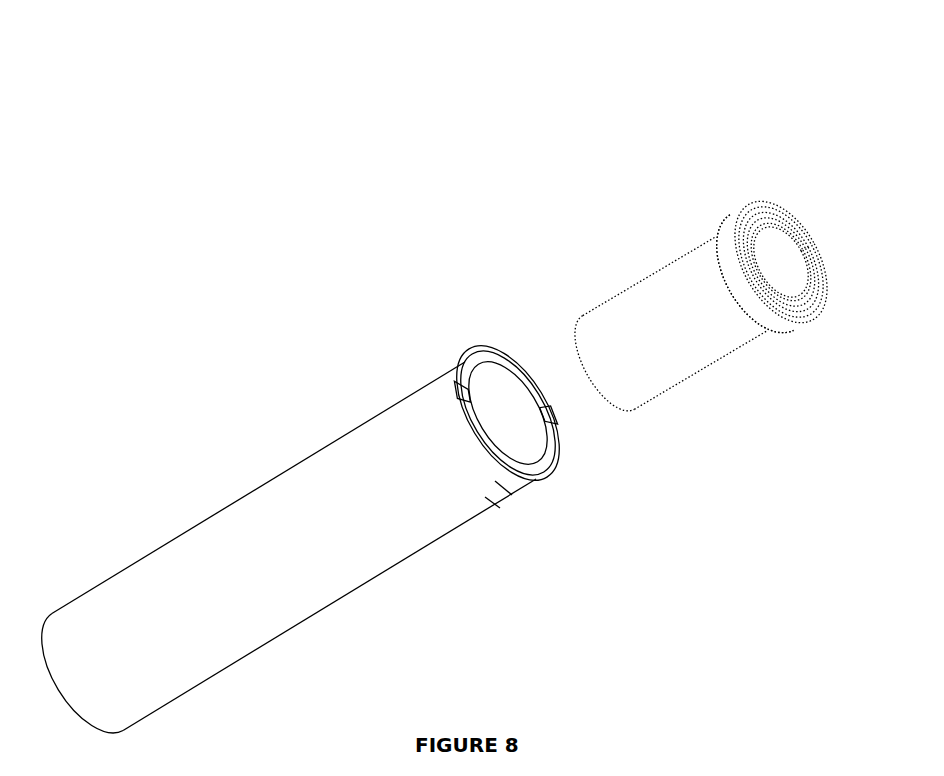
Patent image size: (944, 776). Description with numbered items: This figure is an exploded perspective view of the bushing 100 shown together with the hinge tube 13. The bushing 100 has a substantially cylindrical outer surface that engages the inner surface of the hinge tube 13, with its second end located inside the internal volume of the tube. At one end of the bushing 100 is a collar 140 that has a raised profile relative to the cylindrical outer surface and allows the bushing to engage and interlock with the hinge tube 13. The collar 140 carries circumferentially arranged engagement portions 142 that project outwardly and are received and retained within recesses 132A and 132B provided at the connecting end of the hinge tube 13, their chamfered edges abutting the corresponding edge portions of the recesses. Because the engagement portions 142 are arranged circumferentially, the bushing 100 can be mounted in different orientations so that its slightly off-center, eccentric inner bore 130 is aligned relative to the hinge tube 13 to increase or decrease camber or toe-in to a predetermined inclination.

The hinge tube 13 is at (353, 420).
The bushing 100 is at (637, 282).
The inner bore 130 is at (765, 268).
The recess 132A is at (458, 395).
The recess 132B is at (557, 442).
The collar 140 is at (750, 170).
The engagement portions 142 is at (744, 315).